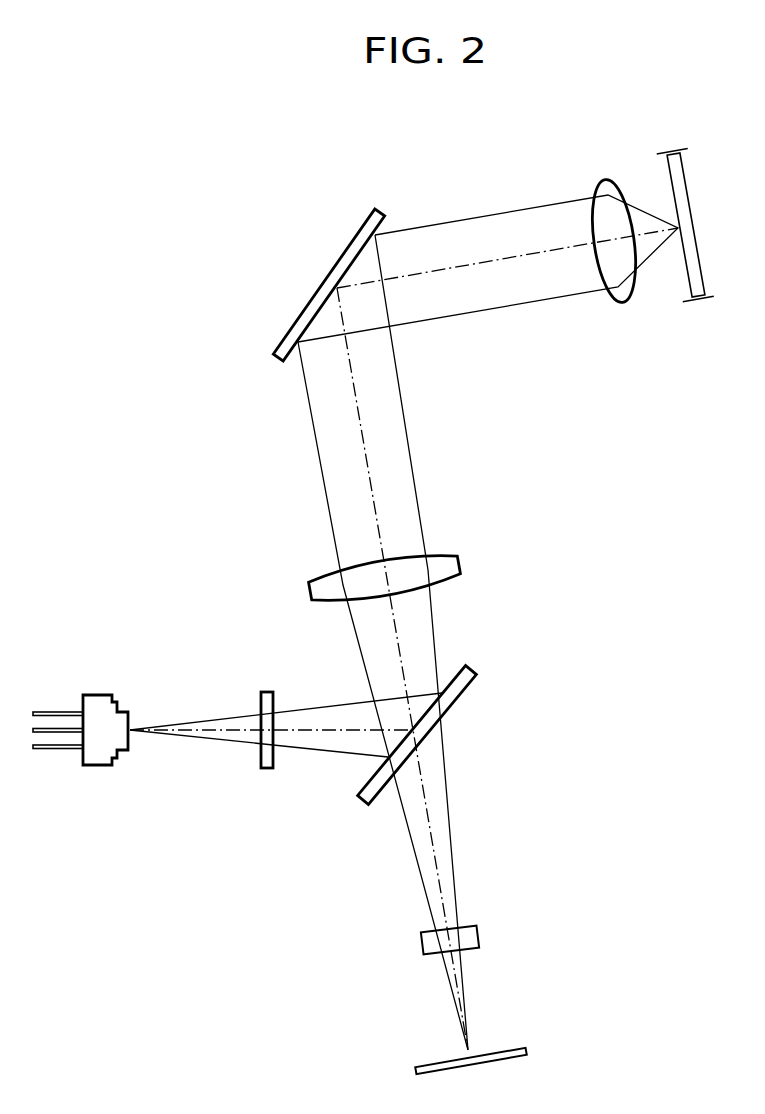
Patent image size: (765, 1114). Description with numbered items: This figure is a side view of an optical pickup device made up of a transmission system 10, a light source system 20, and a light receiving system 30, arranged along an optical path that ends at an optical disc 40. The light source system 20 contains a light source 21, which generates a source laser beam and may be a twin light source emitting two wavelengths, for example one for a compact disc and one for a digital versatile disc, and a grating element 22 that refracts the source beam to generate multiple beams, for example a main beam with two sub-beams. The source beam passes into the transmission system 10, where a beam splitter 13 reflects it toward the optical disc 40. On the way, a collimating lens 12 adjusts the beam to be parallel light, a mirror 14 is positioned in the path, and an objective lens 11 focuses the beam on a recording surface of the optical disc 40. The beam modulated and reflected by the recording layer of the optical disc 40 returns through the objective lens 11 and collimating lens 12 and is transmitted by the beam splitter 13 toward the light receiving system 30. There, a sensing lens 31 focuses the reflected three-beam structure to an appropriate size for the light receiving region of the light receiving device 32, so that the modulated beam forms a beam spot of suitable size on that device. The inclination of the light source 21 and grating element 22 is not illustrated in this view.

The transmission system 10 is at (498, 351).
The objective lens 11 is at (623, 303).
The collimating lens 12 is at (450, 563).
The beam splitter 13 is at (472, 680).
The reflecting mirror 14 is at (312, 313).
The light source system 20 is at (243, 811).
The light source 21 is at (98, 758).
The grating element 22 is at (265, 760).
The light receiving system 30 is at (557, 907).
The sensing lens 31 is at (472, 937).
The light receiving device 32 is at (527, 1050).
The optical disc 40 is at (696, 298).